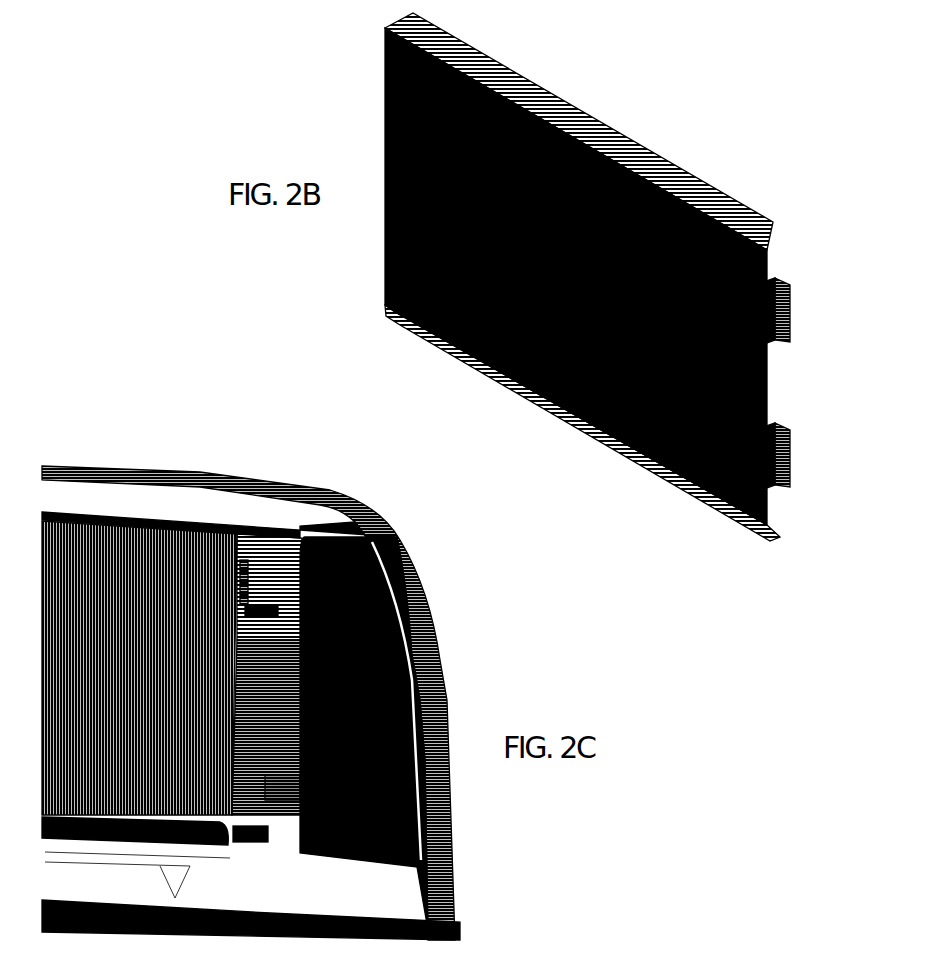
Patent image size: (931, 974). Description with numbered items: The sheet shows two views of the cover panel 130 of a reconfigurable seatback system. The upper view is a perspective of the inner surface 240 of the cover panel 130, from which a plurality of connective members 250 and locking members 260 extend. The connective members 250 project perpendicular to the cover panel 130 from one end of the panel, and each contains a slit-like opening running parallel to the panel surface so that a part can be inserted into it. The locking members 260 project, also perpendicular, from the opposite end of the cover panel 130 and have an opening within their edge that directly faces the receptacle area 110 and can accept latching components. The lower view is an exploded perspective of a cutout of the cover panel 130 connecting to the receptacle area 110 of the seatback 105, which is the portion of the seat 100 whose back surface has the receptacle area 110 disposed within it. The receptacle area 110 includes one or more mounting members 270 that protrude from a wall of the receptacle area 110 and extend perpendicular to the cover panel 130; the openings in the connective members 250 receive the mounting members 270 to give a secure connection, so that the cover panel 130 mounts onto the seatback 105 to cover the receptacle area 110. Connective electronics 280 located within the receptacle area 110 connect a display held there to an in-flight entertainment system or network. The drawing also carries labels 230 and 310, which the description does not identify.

In FIG. 2C, the seat 100 is at (269, 688).
In FIG. 2C, the seatback 105 is at (357, 605).
In FIG. 2C, the receptacle area 110 is at (300, 528).
In FIG. 2B, the cover panel 130 is at (582, 277).
In FIG. 2C, the cover panel 130 is at (272, 670).
In FIG. 2C, the panel body 230 is at (170, 560).
In FIG. 2B, the inner surface 240 is at (553, 148).
In FIG. 2B, the connective members 250 is at (398, 107).
In FIG. 2C, the connective members 250 is at (243, 627).
In FIG. 2B, the locking members 260 is at (787, 312).
In FIG. 2C, the mounting members 270 is at (292, 630).
In FIG. 2C, the connective electronics 280 is at (275, 682).
In FIG. 2B, the sheet reference 310 is at (69, 11).